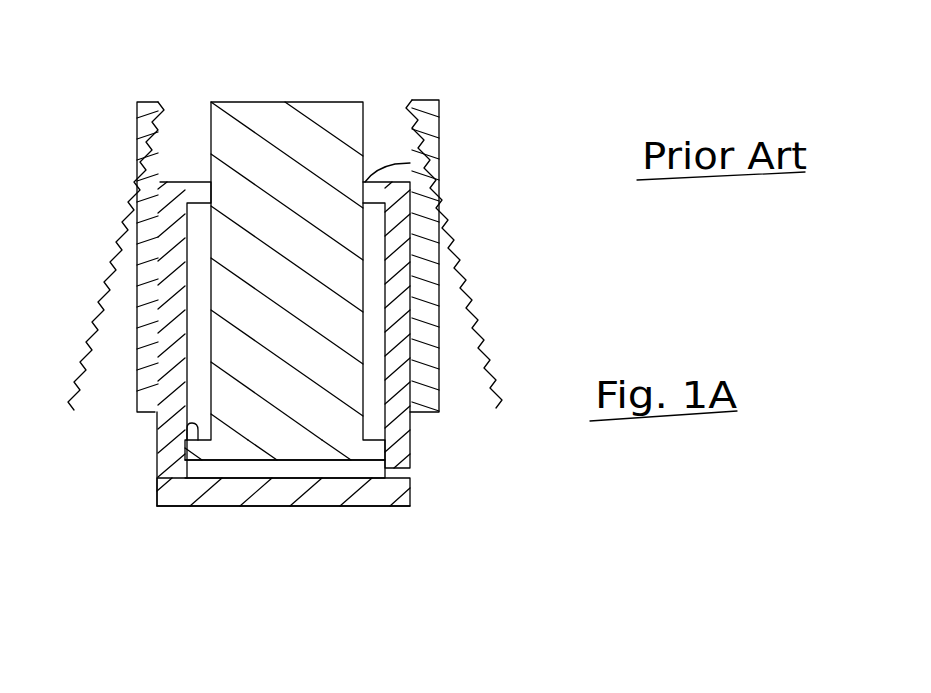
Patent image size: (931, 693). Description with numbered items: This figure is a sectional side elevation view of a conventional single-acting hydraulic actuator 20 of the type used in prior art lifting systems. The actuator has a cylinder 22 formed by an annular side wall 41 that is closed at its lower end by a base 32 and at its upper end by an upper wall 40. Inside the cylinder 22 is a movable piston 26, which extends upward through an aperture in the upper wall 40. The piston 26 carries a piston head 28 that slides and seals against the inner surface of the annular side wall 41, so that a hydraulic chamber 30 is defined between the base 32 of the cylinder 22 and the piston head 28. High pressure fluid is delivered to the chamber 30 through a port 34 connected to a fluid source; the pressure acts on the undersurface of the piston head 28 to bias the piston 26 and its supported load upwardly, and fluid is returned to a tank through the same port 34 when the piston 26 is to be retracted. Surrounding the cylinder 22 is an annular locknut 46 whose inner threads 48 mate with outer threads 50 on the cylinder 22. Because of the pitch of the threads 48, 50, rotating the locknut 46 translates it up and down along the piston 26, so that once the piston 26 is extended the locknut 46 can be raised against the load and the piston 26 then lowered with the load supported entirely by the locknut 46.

The hydraulic actuator 20 is at (507, 141).
The cylinder 22 is at (413, 288).
The piston 26 is at (367, 123).
The piston head 28 is at (188, 425).
The hydraulic chamber 30 is at (234, 478).
The base 32 is at (267, 507).
The port 34 is at (387, 465).
The upper wall 40 is at (412, 163).
The annular side wall 41 is at (413, 420).
The annular locknut 46 is at (137, 202).
The inner threads 48 is at (162, 122).
The outer threads 50 is at (157, 298).